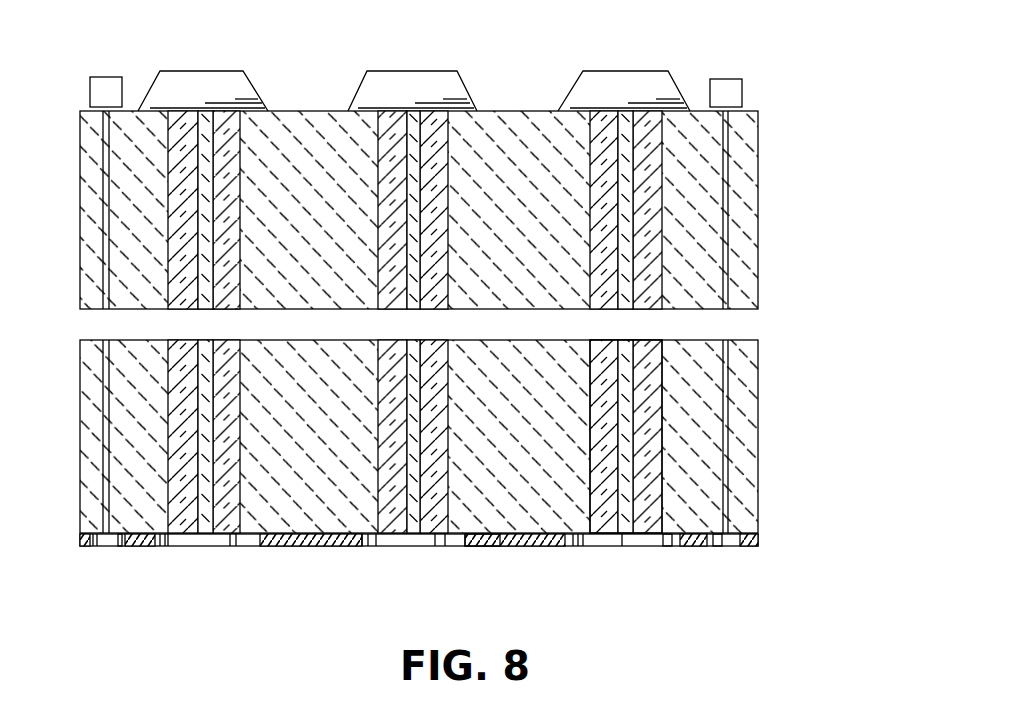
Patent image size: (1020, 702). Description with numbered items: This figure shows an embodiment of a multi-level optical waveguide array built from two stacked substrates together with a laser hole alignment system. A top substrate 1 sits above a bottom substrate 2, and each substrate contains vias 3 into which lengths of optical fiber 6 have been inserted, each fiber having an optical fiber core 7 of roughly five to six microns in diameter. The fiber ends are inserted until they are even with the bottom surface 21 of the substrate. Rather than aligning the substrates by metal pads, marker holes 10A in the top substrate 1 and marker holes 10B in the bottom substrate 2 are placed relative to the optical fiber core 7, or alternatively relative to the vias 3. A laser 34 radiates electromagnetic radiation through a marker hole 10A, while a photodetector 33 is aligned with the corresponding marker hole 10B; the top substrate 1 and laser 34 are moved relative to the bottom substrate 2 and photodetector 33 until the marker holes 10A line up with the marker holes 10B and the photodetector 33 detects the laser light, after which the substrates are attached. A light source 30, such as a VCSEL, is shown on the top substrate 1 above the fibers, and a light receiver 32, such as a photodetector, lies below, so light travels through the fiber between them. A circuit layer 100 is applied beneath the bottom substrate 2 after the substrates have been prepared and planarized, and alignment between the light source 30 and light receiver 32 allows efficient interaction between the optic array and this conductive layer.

The top substrate 1 is at (758, 180).
The bottom substrate 2 is at (758, 442).
The via 3 is at (610, 472).
The optical fiber 6 is at (606, 512).
The optical fiber core 7 is at (619, 522).
The marker hole 10A is at (771, 219).
The marker hole 10B is at (110, 465).
The bottom surface 21 is at (493, 548).
The light source 30 is at (618, 71).
The light receiver 32 is at (668, 537).
The photodetector 33 is at (100, 538).
The laser 34 is at (722, 79).
The circuit layer 100 is at (758, 540).